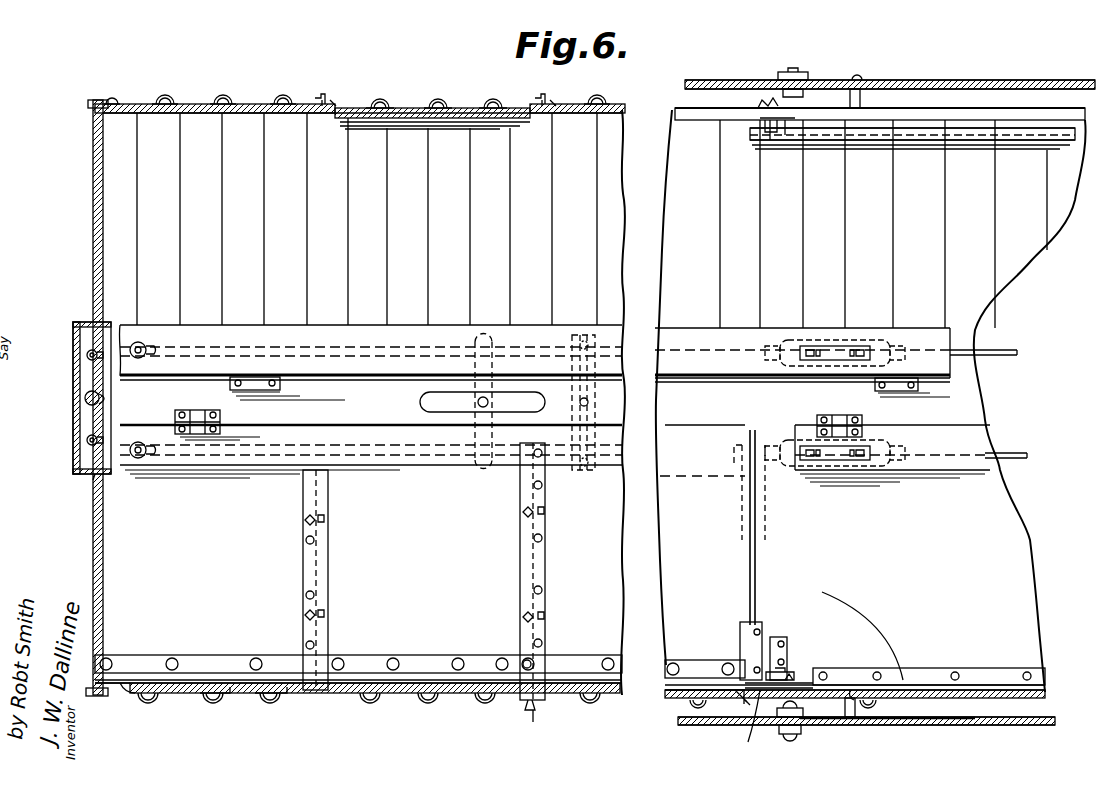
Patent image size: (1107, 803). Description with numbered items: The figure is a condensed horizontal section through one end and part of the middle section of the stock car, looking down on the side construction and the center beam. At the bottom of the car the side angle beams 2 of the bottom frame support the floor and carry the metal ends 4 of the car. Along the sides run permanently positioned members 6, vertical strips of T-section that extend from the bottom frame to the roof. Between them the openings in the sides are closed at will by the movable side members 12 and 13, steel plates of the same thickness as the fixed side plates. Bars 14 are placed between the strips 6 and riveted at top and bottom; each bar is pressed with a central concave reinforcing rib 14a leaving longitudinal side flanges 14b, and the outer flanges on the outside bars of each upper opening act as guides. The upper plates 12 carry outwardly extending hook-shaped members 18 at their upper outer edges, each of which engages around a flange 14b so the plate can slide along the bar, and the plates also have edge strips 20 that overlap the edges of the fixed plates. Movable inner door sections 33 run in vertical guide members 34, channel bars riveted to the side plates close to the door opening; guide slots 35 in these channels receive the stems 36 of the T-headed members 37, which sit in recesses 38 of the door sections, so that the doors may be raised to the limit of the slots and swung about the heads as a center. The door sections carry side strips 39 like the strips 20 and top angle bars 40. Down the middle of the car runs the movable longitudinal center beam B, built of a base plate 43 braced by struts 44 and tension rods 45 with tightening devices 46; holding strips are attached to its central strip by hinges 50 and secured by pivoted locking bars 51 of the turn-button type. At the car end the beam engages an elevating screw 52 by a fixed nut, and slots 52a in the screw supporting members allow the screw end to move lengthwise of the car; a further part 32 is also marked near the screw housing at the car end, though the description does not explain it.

The side angle beams 2 is at (601, 66).
The ends 4 is at (90, 503).
The permanently positioned members 6 is at (534, 712).
The movable side members 12 is at (260, 98).
The movable side members 13 is at (466, 105).
The bars 14 is at (205, 695).
The central concave reinforcing rib 14a is at (215, 700).
The longitudinal side flanges 14b is at (272, 702).
The hook-shaped members 18 is at (135, 698).
The edge strips 20 is at (525, 590).
The plate fastening 32 is at (92, 458).
The inner door sections 33 is at (882, 145).
The vertical guide members 34 is at (800, 108).
The guide slots 35 is at (790, 670).
The stems 36 is at (783, 636).
The T-headed members 37 is at (755, 730).
The recesses 38 is at (825, 592).
The strips 39 is at (745, 647).
The angle bars 40 is at (978, 676).
The base plate 43 is at (370, 352).
The struts 44 is at (584, 472).
The tension rods 45 is at (1027, 452).
The tightening devices 46 is at (845, 340).
The hinges 50 is at (232, 388).
The pivoted locking bars 51 is at (420, 400).
The elevating screws 52 is at (85, 401).
The slots 52a is at (92, 391).
The movable longitudinal center beam B is at (441, 301).